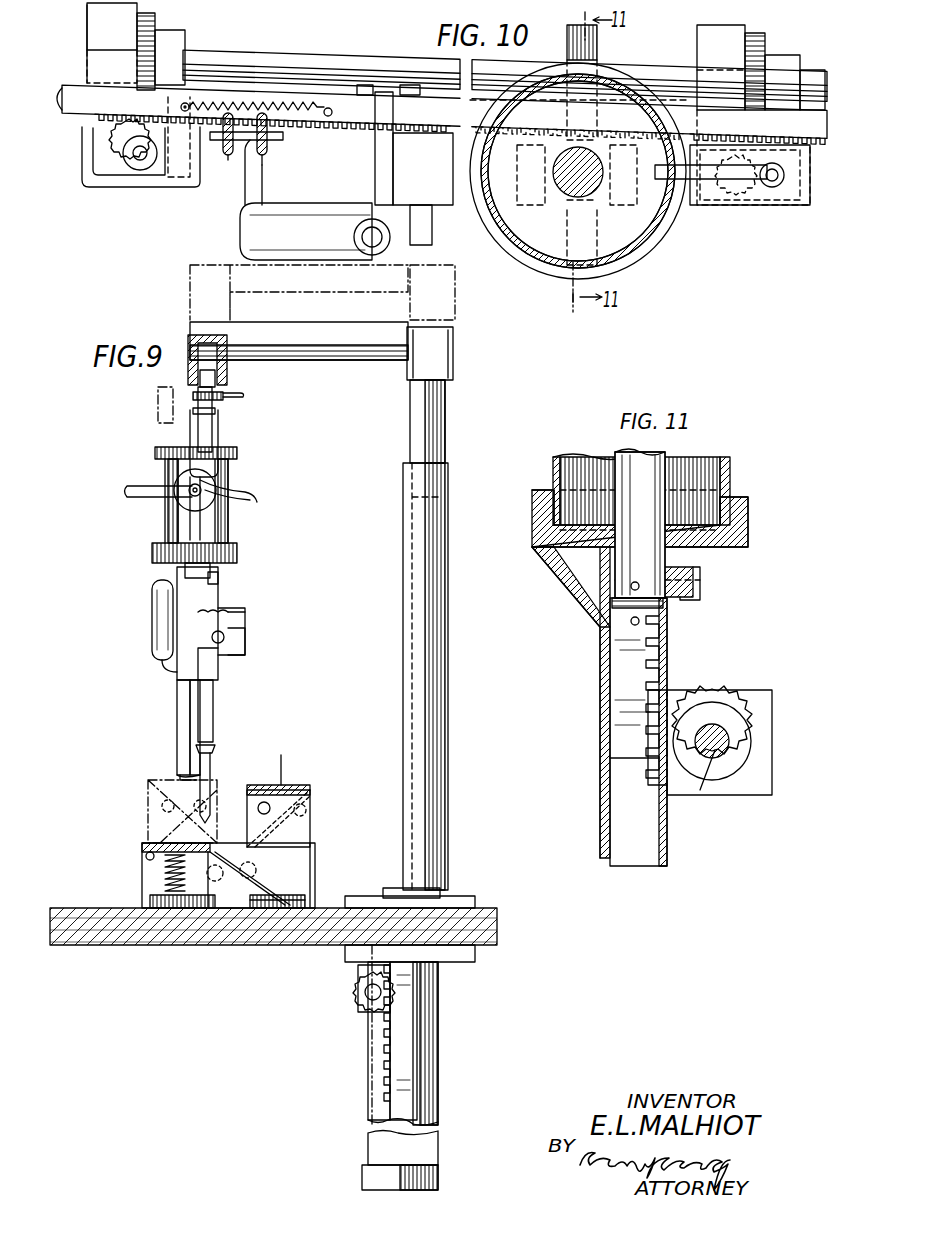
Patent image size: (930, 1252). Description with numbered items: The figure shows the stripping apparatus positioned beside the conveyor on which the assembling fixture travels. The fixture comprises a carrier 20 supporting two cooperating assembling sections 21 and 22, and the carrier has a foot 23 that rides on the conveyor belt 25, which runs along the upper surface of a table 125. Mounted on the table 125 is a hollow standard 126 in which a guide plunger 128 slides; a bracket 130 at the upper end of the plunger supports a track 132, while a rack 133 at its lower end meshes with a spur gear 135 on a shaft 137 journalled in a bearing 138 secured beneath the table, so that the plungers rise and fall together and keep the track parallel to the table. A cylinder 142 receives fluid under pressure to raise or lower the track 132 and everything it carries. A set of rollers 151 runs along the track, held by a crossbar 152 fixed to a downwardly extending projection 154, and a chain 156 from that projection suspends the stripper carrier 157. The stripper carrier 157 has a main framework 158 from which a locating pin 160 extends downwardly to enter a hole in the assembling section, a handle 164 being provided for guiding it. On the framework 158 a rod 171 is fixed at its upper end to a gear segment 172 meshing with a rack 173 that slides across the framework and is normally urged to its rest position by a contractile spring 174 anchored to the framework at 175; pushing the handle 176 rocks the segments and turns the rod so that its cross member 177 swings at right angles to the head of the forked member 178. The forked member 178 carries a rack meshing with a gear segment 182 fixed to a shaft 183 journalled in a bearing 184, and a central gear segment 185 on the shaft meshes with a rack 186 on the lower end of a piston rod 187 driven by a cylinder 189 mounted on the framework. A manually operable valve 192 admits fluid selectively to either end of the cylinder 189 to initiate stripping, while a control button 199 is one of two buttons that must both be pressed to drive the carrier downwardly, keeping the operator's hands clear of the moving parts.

In FIG. 9, the carrier 20 is at (322, 873).
In FIG. 9, the assembling section 21 is at (145, 847).
In FIG. 9, the assembling section 22 is at (142, 804).
In FIG. 9, the foot 23 is at (296, 897).
In FIG. 9, the conveyor belt 25 is at (148, 888).
In FIG. 9, the table 125 is at (278, 947).
In FIG. 9, the hollow standard 126 is at (420, 726).
In FIG. 9, the guide plunger 128 is at (440, 430).
In FIG. 9, the bracket 130 is at (456, 355).
In FIG. 9, the track 132 is at (217, 372).
In FIG. 9, the rack 133 is at (410, 1010).
In FIG. 9, the spur gear 135 is at (356, 992).
In FIG. 9, the shaft 137 is at (362, 1002).
In FIG. 9, the bearing 138 is at (355, 970).
In FIG. 9, the cylinder 142 is at (432, 1077).
In FIG. 9, the set of rollers 151 is at (190, 340).
In FIG. 9, the crossbar 152 is at (215, 402).
In FIG. 9, the projection 154 is at (243, 395).
In FIG. 9, the chain 156 is at (214, 446).
In FIG. 9, the stripper carrier 157 is at (224, 605).
In FIG. 10, the main framework 158 is at (539, 260).
In FIG. 9, the main framework 158 is at (218, 614).
In FIG. 11, the main framework 158 is at (535, 523).
In FIG. 9, the locating pin 160 is at (211, 715).
In FIG. 10, the handle 164 is at (285, 220).
In FIG. 9, the handle 164 is at (158, 630).
In FIG. 10, the rod 171 is at (143, 160).
In FIG. 9, the rod 171 is at (185, 702).
In FIG. 10, the gear segment 172 is at (118, 160).
In FIG. 10, the rack 173 is at (70, 110).
In FIG. 10, the contractile spring 174 is at (235, 105).
In FIG. 10, the spring anchorage 175 is at (190, 104).
In FIG. 10, the handle 176 is at (375, 183).
In FIG. 9, the cross member 177 is at (178, 784).
In FIG. 9, the forked member 178 is at (186, 731).
In FIG. 10, the gear segment 182 is at (158, 18).
In FIG. 9, the gear segment 182 is at (240, 614).
In FIG. 10, the shaft 183 is at (292, 62).
In FIG. 9, the shaft 183 is at (222, 643).
In FIG. 11, the shaft 183 is at (700, 790).
In FIG. 10, the bearing 184 is at (95, 22).
In FIG. 9, the bearing 184 is at (280, 635).
In FIG. 11, the bearing 184 is at (763, 700).
In FIG. 10, the gear segment 185 is at (568, 46).
In FIG. 11, the gear segment 185 is at (714, 685).
In FIG. 11, the rack 186 is at (612, 654).
In FIG. 10, the piston rod 187 is at (560, 183).
In FIG. 11, the piston rod 187 is at (605, 465).
In FIG. 10, the cylinder 189 is at (640, 225).
In FIG. 9, the cylinder 189 is at (170, 420).
In FIG. 11, the cylinder 189 is at (730, 465).
In FIG. 9, the manually operable valve 192 is at (143, 486).
In FIG. 10, the control button 199 is at (428, 230).